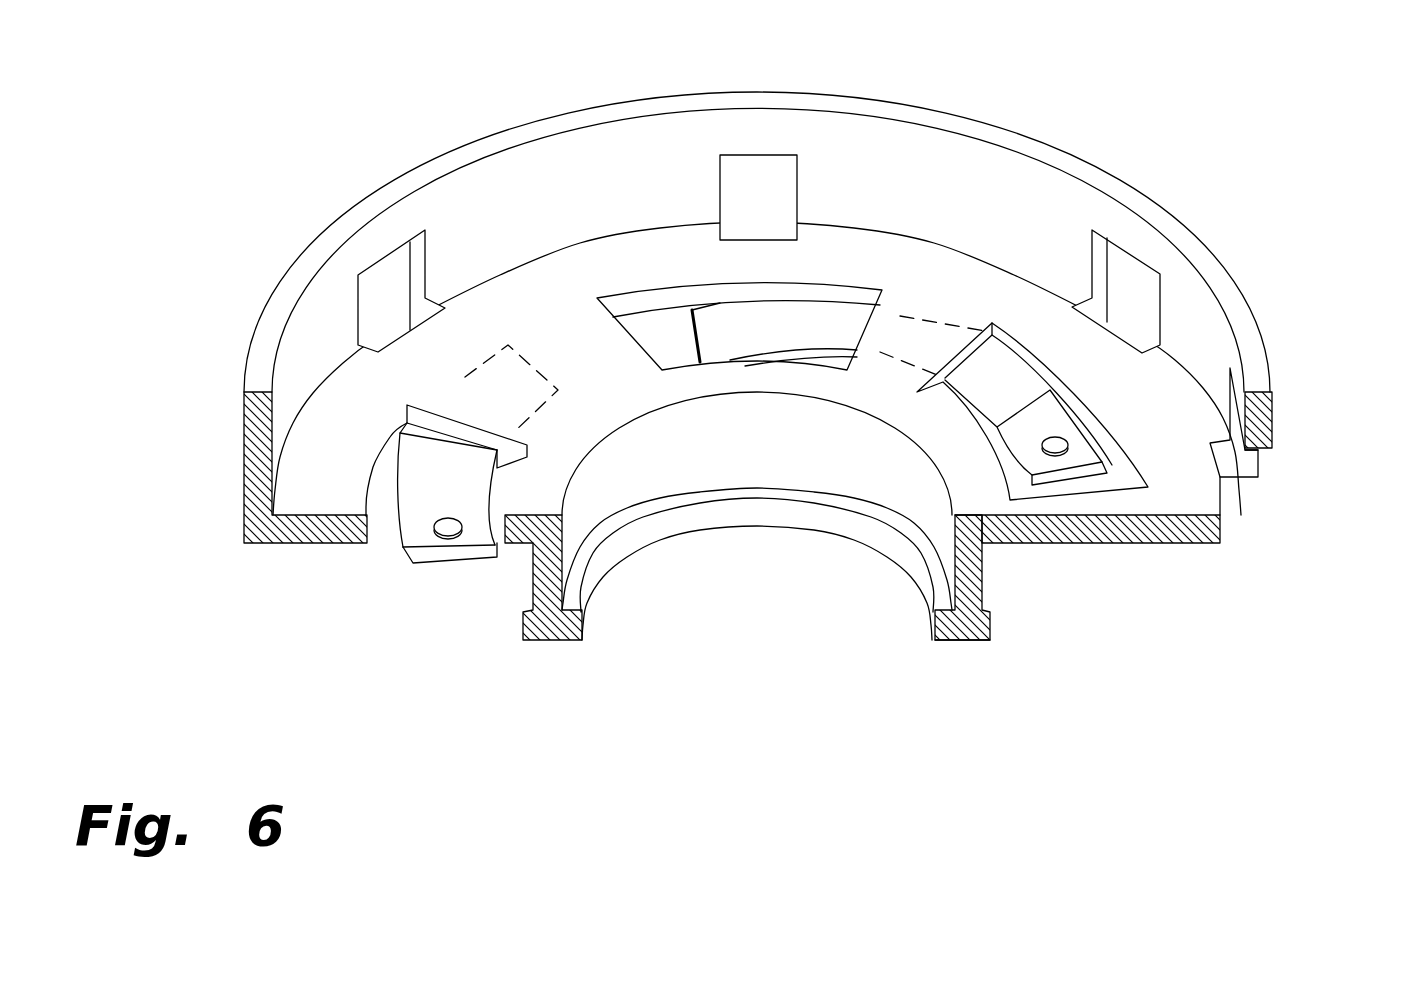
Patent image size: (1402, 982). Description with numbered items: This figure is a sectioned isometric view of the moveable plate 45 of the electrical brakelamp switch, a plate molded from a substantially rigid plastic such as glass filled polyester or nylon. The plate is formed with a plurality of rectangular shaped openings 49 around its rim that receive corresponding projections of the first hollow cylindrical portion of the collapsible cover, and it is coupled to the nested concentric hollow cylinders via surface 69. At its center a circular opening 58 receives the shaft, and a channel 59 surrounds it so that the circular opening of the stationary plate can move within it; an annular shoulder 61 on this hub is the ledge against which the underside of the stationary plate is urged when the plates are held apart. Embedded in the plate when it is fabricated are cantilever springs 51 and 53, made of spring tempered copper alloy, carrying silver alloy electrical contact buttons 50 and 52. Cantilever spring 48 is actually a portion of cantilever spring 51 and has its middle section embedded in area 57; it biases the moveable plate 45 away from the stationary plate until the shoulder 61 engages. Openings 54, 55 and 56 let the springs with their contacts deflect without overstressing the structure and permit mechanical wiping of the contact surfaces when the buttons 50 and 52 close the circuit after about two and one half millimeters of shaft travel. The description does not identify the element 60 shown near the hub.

The moveable plate 45 is at (1213, 248).
The cantilever spring 48 is at (692, 332).
The rectangular shaped opening 49 is at (375, 262).
The electrical contact button 50 is at (1093, 478).
The cantilever spring 51 is at (1087, 420).
The electrical contact button 52 is at (443, 563).
The cantilever spring 53 is at (400, 549).
The opening 54 is at (430, 428).
The opening 55 is at (642, 343).
The opening 56 is at (1030, 347).
The area 57 is at (890, 307).
The circular opening 58 is at (625, 545).
The channel 59 is at (527, 586).
The hub foot 60 is at (953, 640).
The annular shoulder 61 is at (988, 608).
The surface 69 is at (1262, 447).